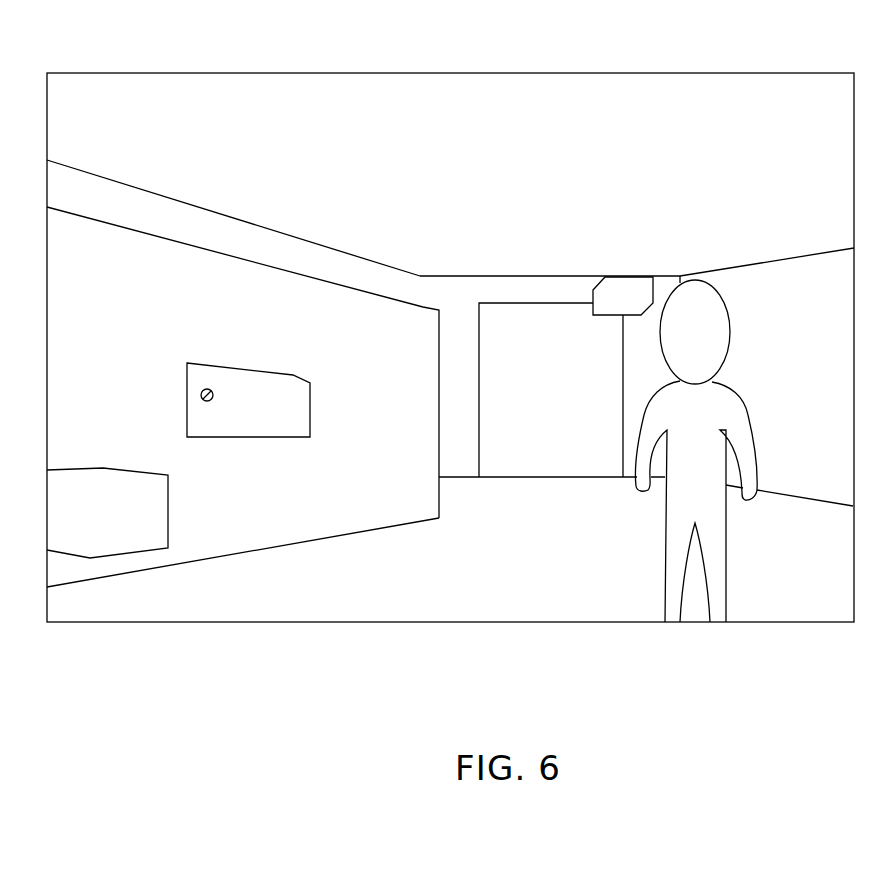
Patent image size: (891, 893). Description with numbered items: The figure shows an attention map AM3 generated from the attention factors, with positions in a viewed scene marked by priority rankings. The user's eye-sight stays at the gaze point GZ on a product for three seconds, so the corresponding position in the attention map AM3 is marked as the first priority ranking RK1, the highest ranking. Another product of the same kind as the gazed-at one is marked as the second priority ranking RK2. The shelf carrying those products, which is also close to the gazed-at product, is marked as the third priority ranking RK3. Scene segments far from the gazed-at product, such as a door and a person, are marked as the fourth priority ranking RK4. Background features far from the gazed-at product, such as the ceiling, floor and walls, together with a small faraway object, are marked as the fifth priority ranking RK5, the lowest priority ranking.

The attention map AM3 is at (723, 73).
The first priority ranking RK1 is at (270, 413).
The second priority ranking RK2 is at (127, 521).
The third priority ranking RK3 is at (235, 318).
The fourth priority ranking RK4 is at (575, 403).
The fifth priority ranking RK5 is at (423, 155).
The gaze point GZ is at (200, 392).